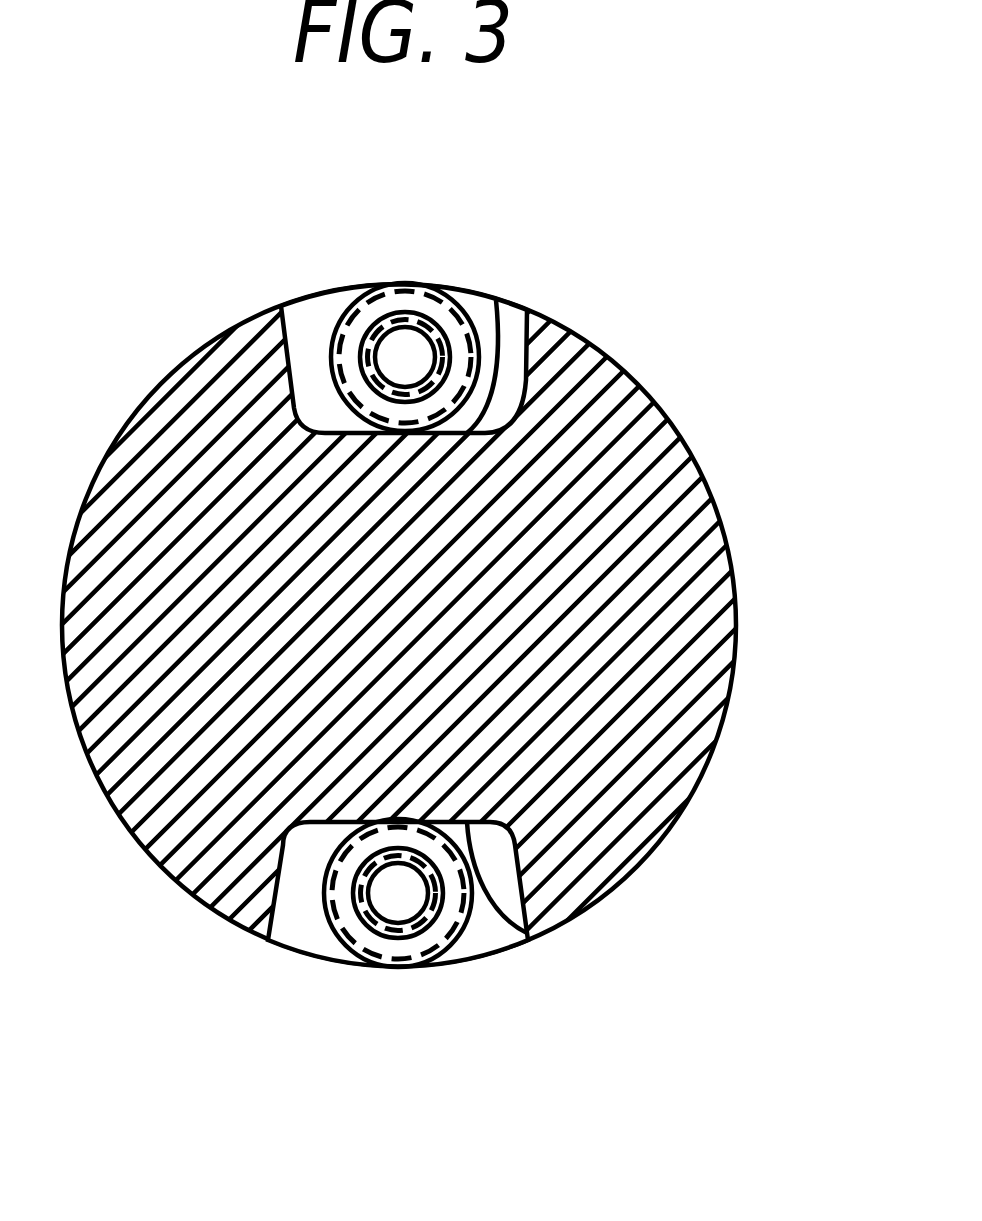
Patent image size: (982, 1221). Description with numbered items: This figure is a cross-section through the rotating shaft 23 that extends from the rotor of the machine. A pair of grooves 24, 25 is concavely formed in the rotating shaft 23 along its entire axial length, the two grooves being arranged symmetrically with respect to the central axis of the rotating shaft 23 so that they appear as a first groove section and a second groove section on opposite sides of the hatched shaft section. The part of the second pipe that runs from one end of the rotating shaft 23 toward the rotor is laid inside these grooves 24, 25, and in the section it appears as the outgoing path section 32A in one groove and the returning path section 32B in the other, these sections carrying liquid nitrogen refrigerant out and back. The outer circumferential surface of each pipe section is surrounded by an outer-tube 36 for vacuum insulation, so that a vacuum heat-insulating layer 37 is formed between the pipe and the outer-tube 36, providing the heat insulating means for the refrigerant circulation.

The rotating shaft 23 is at (727, 528).
The groove 24 is at (496, 300).
The groove 25 is at (533, 925).
The outgoing path section 32A is at (355, 352).
The returning path section 32B is at (400, 930).
The outer-tube 36 is at (352, 343).
The vacuum heat-insulating layer 37 is at (431, 292).